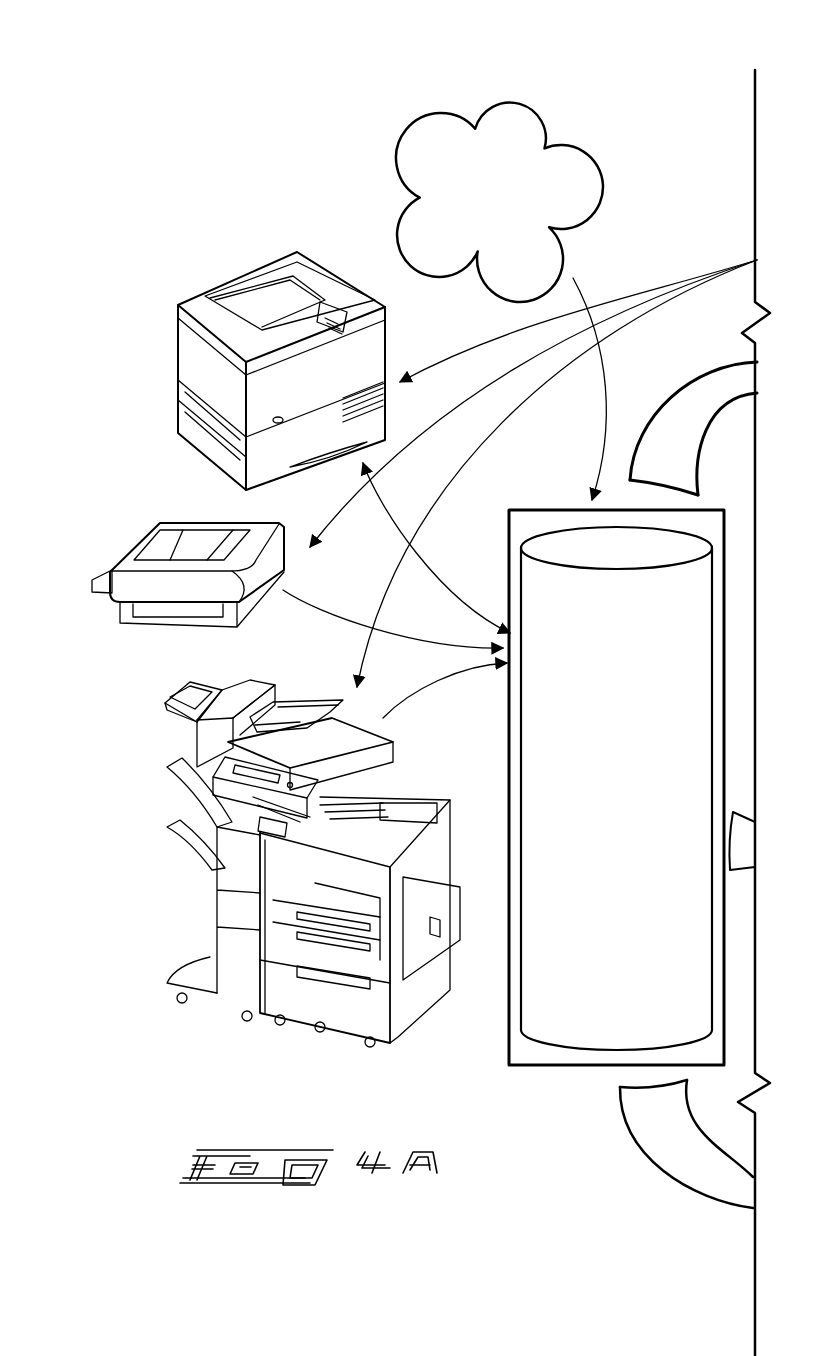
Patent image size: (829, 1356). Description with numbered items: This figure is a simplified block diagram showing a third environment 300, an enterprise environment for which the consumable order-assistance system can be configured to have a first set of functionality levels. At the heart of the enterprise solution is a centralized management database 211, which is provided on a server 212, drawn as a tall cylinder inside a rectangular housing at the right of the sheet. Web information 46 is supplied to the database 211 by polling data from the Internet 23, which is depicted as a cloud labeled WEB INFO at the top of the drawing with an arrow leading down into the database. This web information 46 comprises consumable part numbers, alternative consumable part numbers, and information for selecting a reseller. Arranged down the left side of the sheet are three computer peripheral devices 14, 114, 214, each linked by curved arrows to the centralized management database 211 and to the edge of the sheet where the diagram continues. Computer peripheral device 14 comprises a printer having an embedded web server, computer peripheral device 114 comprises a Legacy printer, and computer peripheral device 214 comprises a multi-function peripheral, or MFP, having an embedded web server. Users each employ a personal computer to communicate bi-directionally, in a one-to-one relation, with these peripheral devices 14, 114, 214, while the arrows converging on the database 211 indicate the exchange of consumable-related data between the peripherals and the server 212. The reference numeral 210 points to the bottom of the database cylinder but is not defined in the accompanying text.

The third environment 300 is at (138, 115).
The Internet 23 is at (392, 123).
The web information 46 is at (593, 157).
The computer peripheral device 114 is at (237, 270).
The computer peripheral device 14 is at (145, 538).
The computer peripheral device 214 is at (215, 906).
The database storage cylinder 210 is at (543, 1047).
The database 211 is at (615, 857).
The server 212 is at (562, 1072).